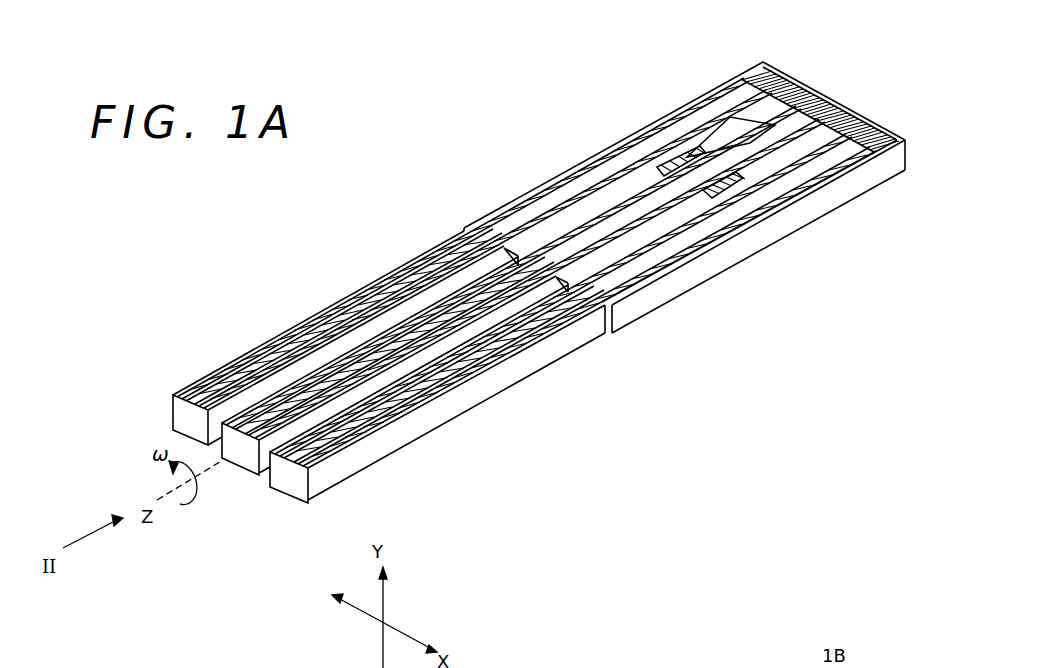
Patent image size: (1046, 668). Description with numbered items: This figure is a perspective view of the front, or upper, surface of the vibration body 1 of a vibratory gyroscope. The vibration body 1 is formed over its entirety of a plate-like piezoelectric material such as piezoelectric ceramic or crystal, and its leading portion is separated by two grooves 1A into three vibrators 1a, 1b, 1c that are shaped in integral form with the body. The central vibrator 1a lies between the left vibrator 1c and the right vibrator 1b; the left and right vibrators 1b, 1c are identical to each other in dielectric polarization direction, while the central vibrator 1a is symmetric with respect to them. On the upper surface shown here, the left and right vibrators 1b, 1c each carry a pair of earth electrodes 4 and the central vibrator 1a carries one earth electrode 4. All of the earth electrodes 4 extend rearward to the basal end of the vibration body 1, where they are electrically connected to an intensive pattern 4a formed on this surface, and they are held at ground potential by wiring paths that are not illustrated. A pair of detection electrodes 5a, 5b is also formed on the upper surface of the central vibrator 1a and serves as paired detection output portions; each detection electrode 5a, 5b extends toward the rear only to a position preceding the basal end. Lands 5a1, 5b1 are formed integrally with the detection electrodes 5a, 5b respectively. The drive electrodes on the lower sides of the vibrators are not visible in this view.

The vibration body 1 is at (506, 287).
The groove 1A is at (491, 315).
The central vibrator 1a is at (250, 457).
The right vibrator 1b is at (573, 343).
The left vibrator 1c is at (439, 261).
The earth electrode 4 is at (403, 360).
The intensive pattern 4a is at (750, 87).
The detection electrode 5a is at (335, 436).
The detection electrode 5b is at (242, 397).
The land 5a1 is at (735, 185).
The land 5b1 is at (680, 158).